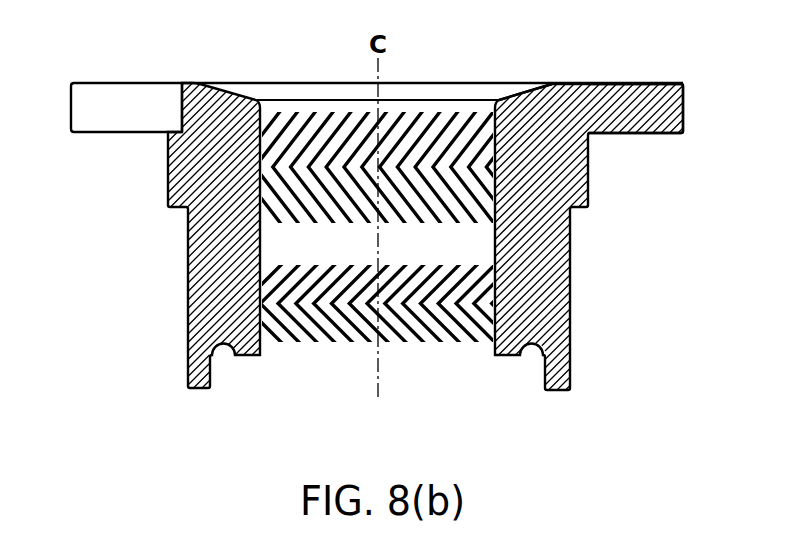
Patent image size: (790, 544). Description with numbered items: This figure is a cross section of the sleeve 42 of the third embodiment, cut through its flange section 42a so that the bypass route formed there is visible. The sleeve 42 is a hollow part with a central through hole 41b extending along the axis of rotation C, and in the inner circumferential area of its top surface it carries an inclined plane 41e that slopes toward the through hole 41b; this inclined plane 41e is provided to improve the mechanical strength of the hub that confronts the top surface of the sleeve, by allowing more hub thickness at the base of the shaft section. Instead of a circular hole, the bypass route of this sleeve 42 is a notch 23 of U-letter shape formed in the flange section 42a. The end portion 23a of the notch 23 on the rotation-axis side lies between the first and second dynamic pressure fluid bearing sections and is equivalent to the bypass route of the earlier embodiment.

The notch 23 is at (102, 110).
The end portion of the notch 23a is at (182, 102).
The inclined plane 41e is at (526, 94).
The flange section 42a is at (637, 92).
The through hole 41b is at (457, 247).
The sleeve 42 is at (207, 293).